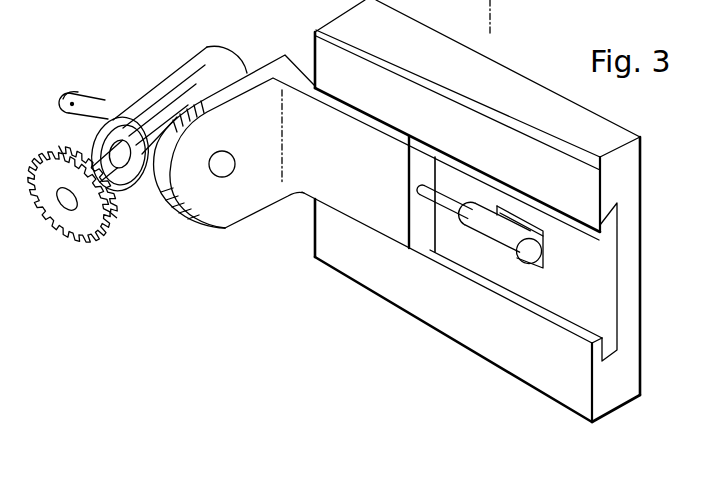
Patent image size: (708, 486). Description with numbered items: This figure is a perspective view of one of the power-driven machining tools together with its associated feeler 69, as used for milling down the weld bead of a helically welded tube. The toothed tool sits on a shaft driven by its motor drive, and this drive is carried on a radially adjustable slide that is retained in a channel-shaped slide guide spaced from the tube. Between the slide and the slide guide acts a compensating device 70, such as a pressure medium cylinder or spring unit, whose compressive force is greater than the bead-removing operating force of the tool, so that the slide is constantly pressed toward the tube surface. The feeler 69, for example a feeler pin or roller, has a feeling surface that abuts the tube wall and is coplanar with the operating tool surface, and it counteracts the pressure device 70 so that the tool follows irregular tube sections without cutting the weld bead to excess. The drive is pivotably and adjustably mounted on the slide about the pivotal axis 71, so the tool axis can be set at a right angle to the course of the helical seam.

The feeler 69 is at (102, 106).
The pivotal axis 71 is at (228, 160).
The compensating device 70 is at (506, 240).